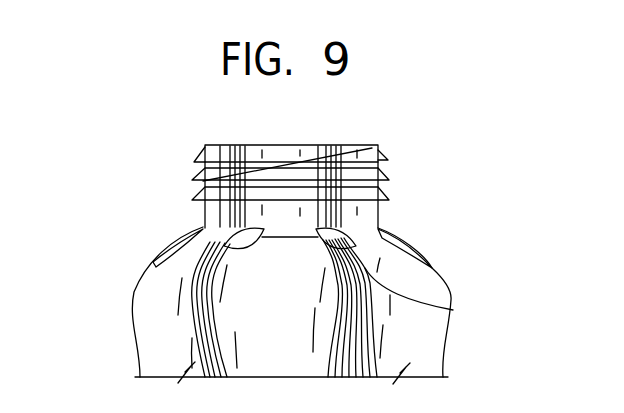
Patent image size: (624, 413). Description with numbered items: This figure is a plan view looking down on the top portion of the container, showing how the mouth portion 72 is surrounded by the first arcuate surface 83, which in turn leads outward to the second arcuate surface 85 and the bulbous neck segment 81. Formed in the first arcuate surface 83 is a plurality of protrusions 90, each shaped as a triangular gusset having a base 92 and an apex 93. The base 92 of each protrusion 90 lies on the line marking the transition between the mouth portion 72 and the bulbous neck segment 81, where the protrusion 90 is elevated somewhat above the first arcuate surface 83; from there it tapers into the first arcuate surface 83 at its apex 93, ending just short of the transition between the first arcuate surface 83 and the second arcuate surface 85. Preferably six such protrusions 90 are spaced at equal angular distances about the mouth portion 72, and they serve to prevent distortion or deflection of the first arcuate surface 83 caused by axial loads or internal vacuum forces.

The mouth portion 72 is at (190, 150).
The bulbous neck segment 81 is at (128, 292).
The first arcuate surface 83 is at (172, 247).
The second arcuate surface 85 is at (450, 290).
The protrusion 90 is at (186, 230).
The base 92 is at (250, 242).
The apex 93 is at (452, 312).